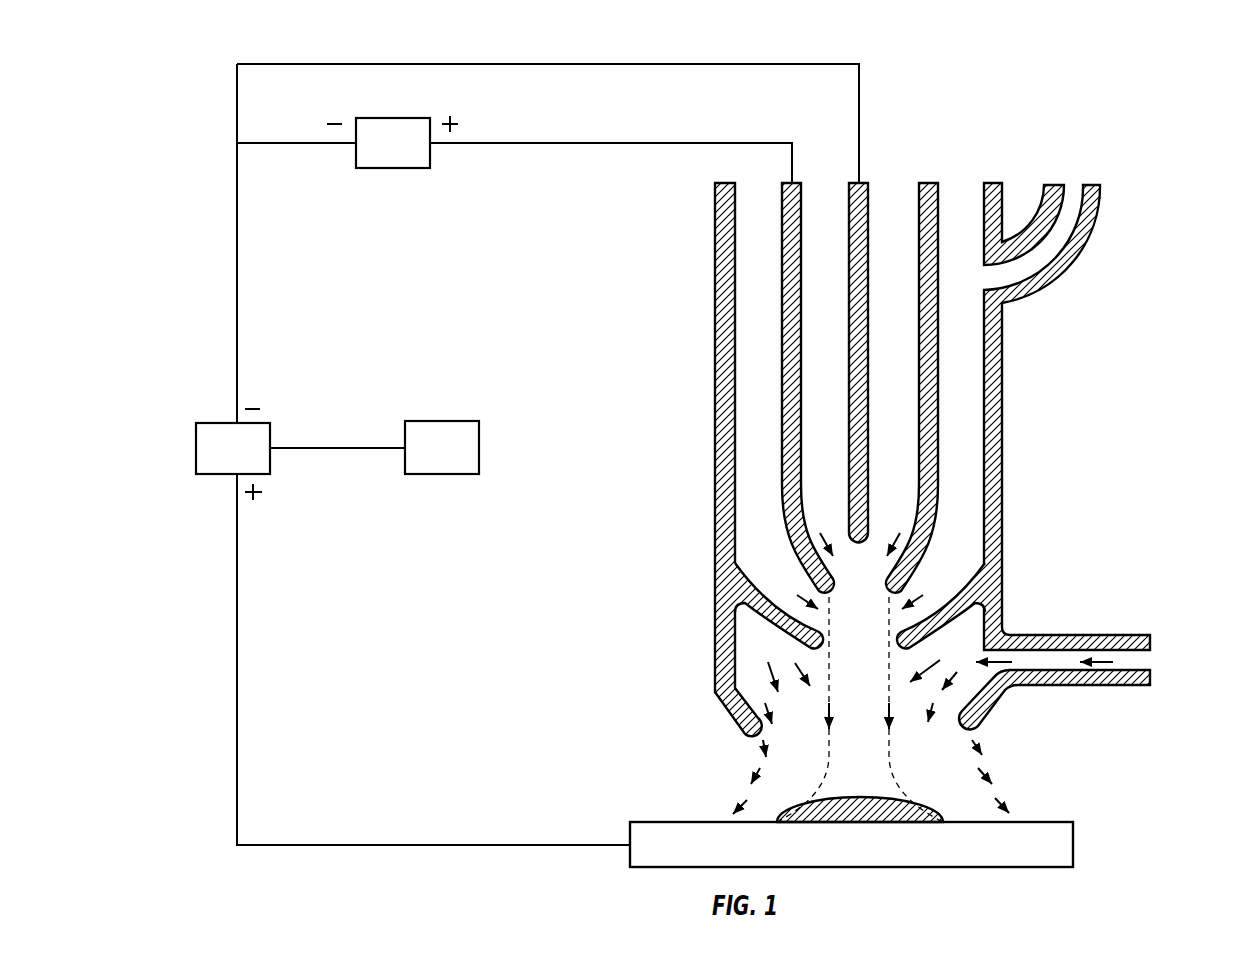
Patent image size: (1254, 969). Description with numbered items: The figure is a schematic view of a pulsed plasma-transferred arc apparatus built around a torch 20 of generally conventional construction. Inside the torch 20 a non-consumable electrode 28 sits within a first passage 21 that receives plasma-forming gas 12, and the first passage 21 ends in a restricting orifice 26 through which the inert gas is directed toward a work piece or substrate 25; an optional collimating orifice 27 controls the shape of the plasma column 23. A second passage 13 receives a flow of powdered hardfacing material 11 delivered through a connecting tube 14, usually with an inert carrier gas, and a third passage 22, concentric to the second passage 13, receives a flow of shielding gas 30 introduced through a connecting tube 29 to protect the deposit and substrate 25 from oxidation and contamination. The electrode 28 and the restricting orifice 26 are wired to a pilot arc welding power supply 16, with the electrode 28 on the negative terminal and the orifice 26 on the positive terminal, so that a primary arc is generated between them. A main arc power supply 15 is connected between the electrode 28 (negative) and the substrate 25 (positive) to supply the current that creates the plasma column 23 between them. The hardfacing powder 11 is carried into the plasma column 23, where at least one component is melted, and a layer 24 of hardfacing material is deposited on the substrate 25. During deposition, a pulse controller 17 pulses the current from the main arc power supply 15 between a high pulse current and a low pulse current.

The powdered hardfacing material 11 is at (1073, 180).
The plasma-forming gas 12 is at (894, 180).
The second passage 13 is at (1004, 224).
The connecting tube 14 is at (1067, 417).
The main arc power supply 15 is at (233, 454).
The pilot arc welding power supply 16 is at (392, 142).
The pulse controller 17 is at (442, 447).
The torch 20 is at (703, 355).
The first passage 21 is at (909, 388).
The third passage 22 is at (942, 609).
The plasma column 23 is at (860, 709).
The layer of hardfacing material 24 is at (802, 812).
The substrate 25 is at (851, 844).
The restricting orifice 26 is at (805, 583).
The collimating orifice 27 is at (802, 646).
The non-consumable electrode 28 is at (867, 420).
The connecting tube 29 is at (1054, 663).
The shielding gas 30 is at (1160, 662).